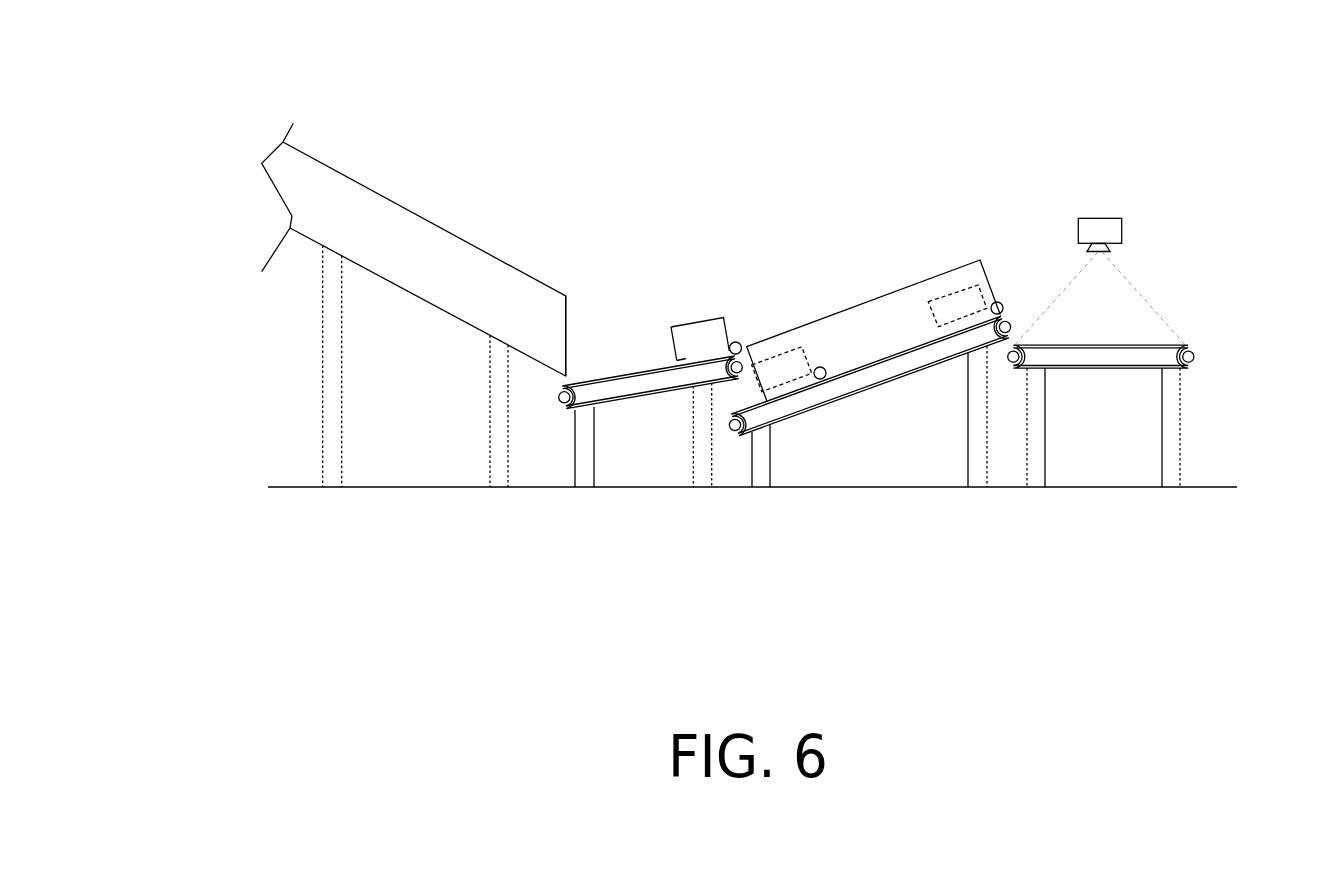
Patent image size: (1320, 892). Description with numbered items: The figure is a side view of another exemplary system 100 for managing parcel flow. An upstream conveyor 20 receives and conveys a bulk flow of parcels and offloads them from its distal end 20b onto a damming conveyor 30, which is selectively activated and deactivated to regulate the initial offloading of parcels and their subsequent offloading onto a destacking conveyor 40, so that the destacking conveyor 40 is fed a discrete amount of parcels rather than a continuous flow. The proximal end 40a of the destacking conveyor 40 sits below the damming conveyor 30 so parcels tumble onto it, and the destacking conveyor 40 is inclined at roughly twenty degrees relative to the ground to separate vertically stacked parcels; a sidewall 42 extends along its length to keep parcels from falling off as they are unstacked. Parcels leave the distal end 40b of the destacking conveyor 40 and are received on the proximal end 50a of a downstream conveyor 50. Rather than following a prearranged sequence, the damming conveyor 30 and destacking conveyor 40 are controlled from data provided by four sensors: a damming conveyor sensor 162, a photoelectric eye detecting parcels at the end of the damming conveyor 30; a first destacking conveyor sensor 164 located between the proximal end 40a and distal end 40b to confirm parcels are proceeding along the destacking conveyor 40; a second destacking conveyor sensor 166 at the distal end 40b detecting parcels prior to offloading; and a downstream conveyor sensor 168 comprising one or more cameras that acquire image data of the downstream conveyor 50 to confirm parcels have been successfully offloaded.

The system for managing parcel flow 100 is at (245, 157).
The upstream conveyor 20 is at (445, 230).
The distal end of the upstream conveyor 20b is at (566, 315).
The damming conveyor 30 is at (593, 381).
The destacking conveyor 40 is at (902, 353).
The proximal end of the destacking conveyor 40a is at (727, 428).
The distal end of the destacking conveyor 40b is at (1002, 337).
The sidewall 42 is at (947, 277).
The downstream conveyor 50 is at (1097, 346).
The proximal end of the downstream conveyor 50a is at (1010, 367).
The damming conveyor sensor 162 is at (736, 342).
The first destacking conveyor sensor 164 is at (820, 366).
The second destacking conveyor sensor 166 is at (997, 305).
The downstream conveyor sensor 168 is at (1123, 233).